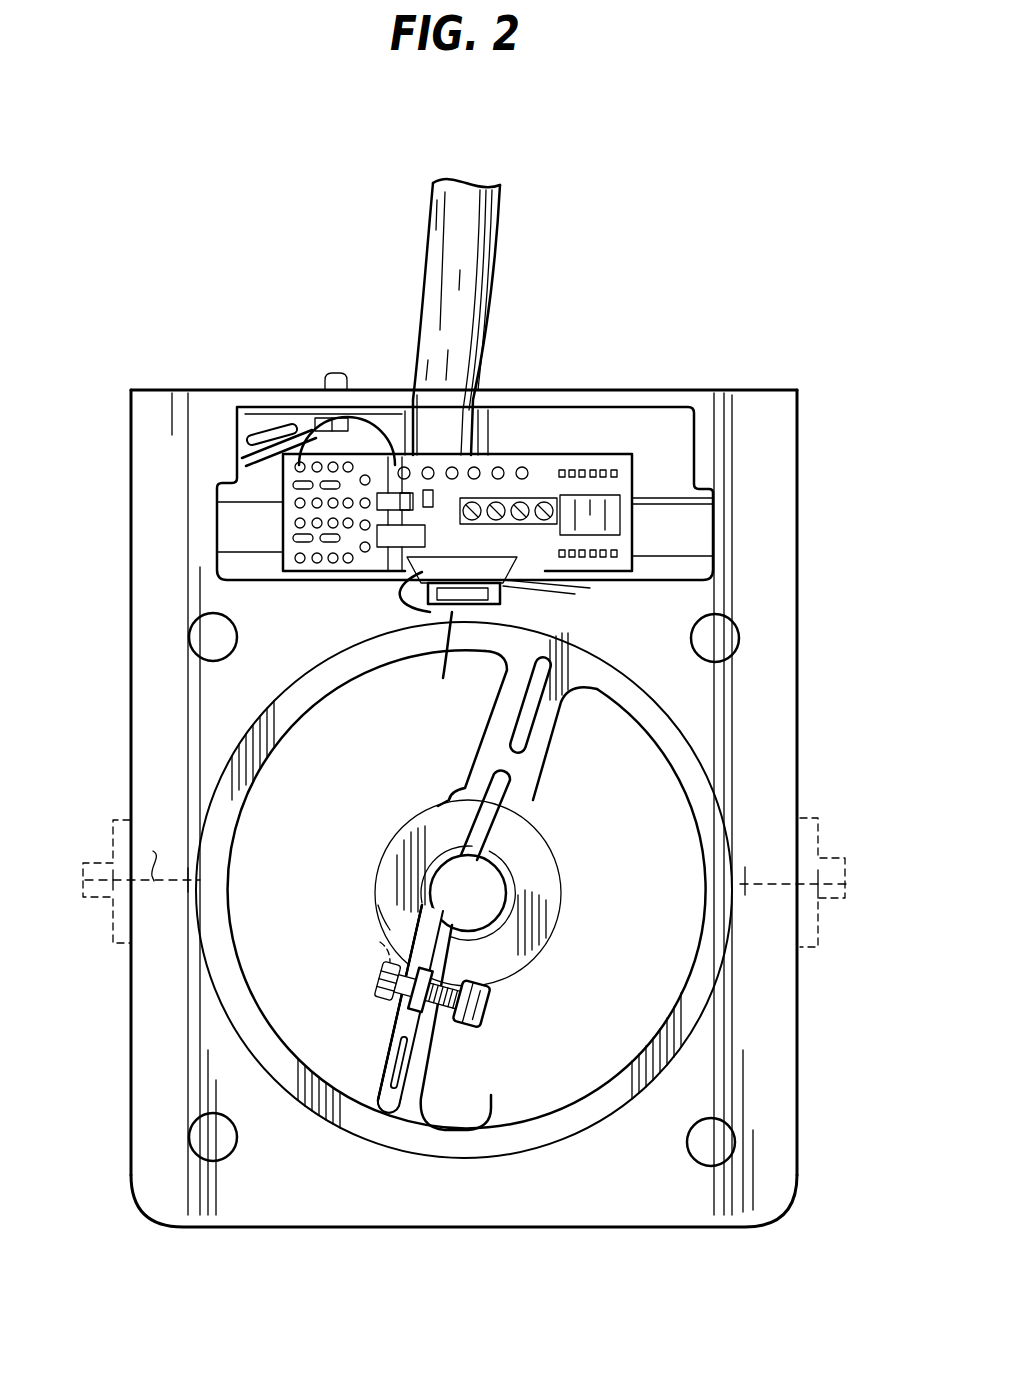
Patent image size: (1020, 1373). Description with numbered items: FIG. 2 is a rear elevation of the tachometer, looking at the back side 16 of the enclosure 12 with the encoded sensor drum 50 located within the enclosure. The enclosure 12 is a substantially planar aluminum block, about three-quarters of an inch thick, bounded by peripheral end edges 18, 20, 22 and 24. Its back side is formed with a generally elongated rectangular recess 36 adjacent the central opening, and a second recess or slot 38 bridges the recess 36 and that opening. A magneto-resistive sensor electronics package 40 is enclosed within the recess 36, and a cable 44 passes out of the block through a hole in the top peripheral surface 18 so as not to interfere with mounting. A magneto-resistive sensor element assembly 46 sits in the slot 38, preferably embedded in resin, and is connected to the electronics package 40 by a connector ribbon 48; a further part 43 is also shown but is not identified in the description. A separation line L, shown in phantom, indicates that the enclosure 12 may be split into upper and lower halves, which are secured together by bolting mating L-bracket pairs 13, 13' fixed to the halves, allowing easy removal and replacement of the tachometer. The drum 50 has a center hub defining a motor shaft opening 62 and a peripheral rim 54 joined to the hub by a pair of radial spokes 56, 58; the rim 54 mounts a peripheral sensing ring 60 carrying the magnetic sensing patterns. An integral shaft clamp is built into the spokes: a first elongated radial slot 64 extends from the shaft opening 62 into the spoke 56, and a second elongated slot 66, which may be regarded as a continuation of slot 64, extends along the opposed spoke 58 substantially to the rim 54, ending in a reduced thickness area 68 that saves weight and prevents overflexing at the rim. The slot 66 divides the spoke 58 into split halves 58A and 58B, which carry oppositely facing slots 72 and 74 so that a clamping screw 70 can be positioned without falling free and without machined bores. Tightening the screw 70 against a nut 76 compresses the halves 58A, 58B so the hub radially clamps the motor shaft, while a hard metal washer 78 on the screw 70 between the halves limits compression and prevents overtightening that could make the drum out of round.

The enclosure 12 is at (805, 635).
The L-bracket pair 13 is at (462, 878).
The L-bracket pair 13' is at (463, 908).
The back side 16 is at (787, 470).
The peripheral end edge 18 is at (652, 398).
The peripheral end edge 20 is at (405, 1228).
The peripheral end edge 22 is at (133, 722).
The peripheral end edge 24 is at (798, 765).
The recess 36 is at (665, 437).
The second recess or slot 38 is at (545, 618).
The magneto-resistive sensor electronics package 40 is at (545, 478).
The bracket plate 43 is at (530, 588).
The cable 44 is at (478, 240).
The magneto-resistive sensor element assembly 46 is at (465, 585).
The connector ribbon 48 is at (408, 582).
The encoded sensor drum 50 is at (427, 806).
The peripheral rim 54 is at (618, 1078).
The radial spoke 56 is at (540, 750).
The radial spoke 58 is at (421, 1045).
The split half 58A is at (430, 1062).
The split half 58B is at (375, 1068).
The peripheral sensing ring 60 is at (441, 675).
The motor shaft opening 62 is at (500, 880).
The first elongated radial slot 64 is at (515, 722).
The second elongated slot 66 is at (397, 1037).
The reduced thickness area 68 is at (384, 1118).
The clamping screw 70 is at (485, 1013).
The slot 72 is at (441, 993).
The slot 74 is at (378, 944).
The nut 76 is at (380, 985).
The hard metal washer 78 is at (415, 925).